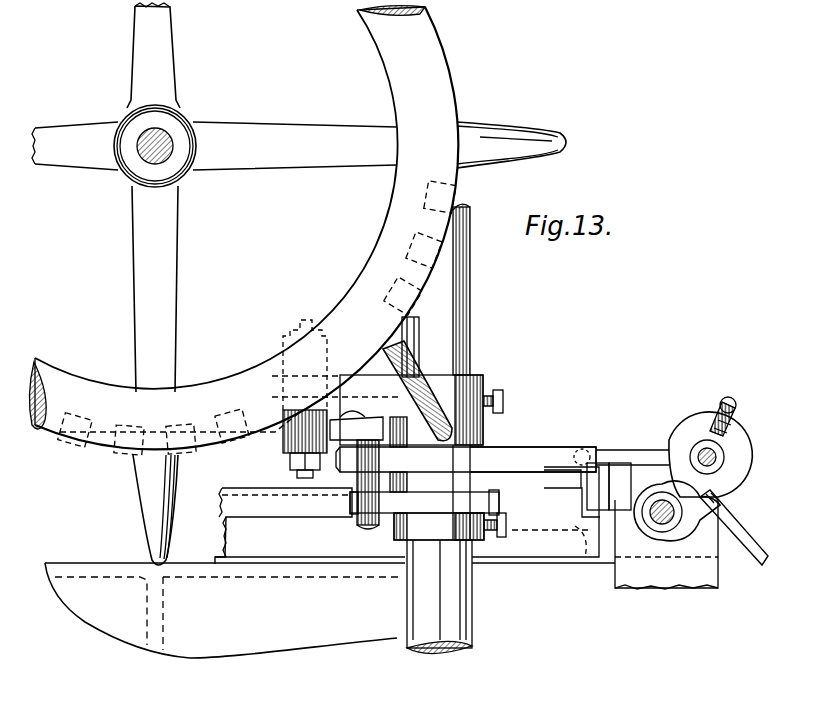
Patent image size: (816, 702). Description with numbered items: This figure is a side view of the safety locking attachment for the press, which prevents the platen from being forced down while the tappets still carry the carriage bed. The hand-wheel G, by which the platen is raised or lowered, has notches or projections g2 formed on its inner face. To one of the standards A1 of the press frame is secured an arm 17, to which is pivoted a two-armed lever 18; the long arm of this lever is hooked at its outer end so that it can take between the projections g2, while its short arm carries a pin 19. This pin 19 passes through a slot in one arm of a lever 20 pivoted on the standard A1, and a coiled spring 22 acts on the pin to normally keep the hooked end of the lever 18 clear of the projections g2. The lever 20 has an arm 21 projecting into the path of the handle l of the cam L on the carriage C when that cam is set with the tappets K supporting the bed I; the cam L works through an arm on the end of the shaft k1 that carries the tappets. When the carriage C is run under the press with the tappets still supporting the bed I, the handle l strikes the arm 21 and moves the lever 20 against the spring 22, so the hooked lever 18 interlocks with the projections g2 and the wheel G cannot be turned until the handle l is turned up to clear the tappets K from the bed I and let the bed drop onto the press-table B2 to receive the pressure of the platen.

The hand-wheel G is at (299, 284).
The projections g2 is at (243, 231).
The standard A1 is at (437, 444).
The arm 17 is at (387, 393).
The two-armed lever 18 is at (320, 399).
The pin 19 is at (376, 484).
The lever 20 is at (466, 460).
The arm 21 is at (533, 459).
The coiled spring 22 is at (428, 515).
The bed I is at (306, 534).
The handle l is at (630, 442).
The cam L is at (672, 427).
The cam or tappet K is at (640, 554).
The shaft k1 is at (718, 527).
The carriage C is at (666, 544).
The press-table B2 is at (330, 610).